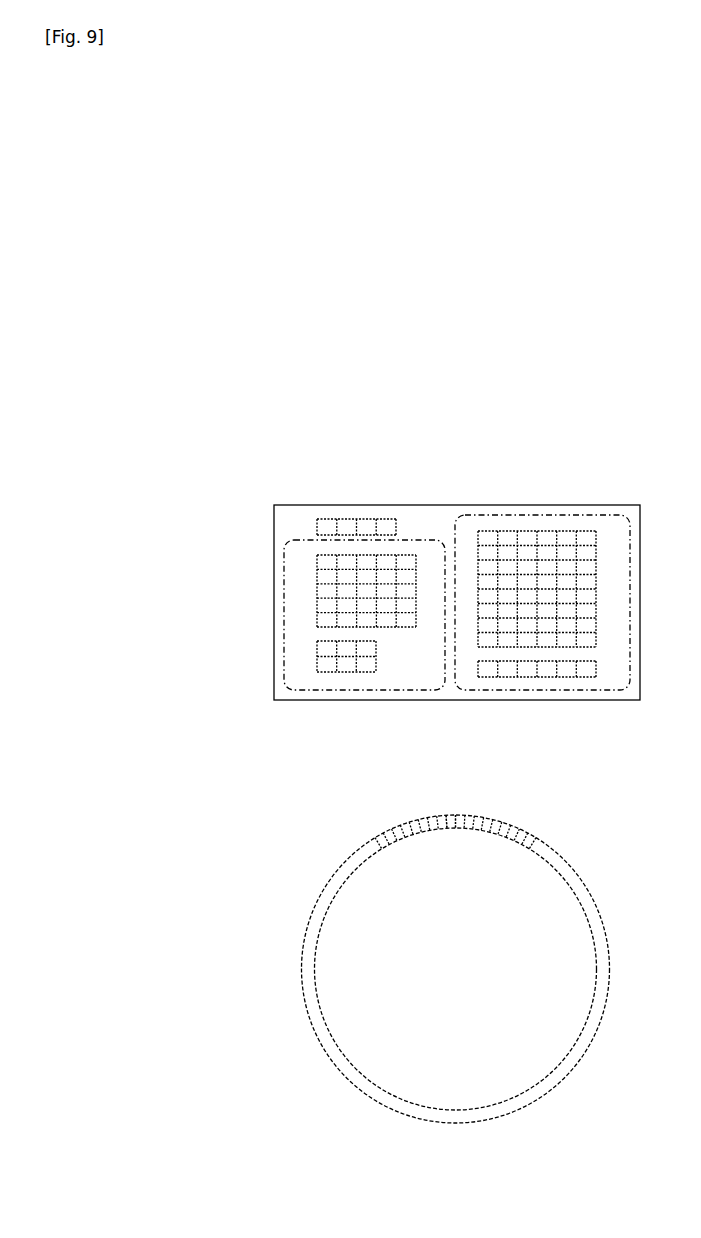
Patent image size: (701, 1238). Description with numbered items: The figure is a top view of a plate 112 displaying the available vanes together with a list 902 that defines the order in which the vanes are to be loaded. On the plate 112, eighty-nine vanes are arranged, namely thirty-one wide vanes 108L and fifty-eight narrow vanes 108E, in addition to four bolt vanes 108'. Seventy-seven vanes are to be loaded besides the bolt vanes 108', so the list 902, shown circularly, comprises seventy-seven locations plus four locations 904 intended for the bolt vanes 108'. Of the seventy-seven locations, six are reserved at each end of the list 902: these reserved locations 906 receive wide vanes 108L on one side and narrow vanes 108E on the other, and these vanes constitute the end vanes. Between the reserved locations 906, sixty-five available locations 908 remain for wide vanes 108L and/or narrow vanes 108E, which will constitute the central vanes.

The plate 112 is at (318, 505).
The bolt vanes 108' is at (358, 499).
The wide vanes 108L is at (387, 690).
The narrow vanes 108E is at (580, 690).
The list 902 is at (583, 869).
The locations for the bolt vanes 904 is at (458, 814).
The reserved locations 906 is at (421, 818).
The available locations 908 is at (340, 885).